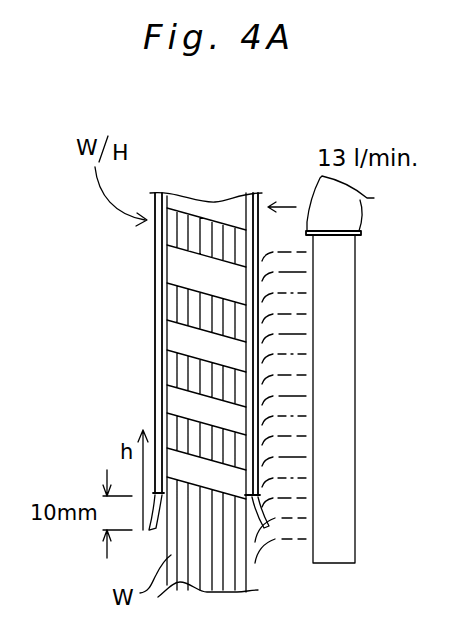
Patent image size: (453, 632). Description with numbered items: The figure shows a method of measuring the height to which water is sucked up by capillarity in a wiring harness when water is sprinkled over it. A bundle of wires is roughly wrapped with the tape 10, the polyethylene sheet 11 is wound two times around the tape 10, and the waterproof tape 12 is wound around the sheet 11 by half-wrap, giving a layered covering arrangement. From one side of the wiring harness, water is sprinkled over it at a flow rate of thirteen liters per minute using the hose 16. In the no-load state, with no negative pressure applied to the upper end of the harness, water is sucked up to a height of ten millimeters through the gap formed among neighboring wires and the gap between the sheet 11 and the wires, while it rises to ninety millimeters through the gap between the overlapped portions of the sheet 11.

The tape 10 is at (175, 262).
The polyethylene sheet 11 is at (160, 340).
The waterproof tape 12 is at (160, 387).
The hose 16 is at (340, 453).